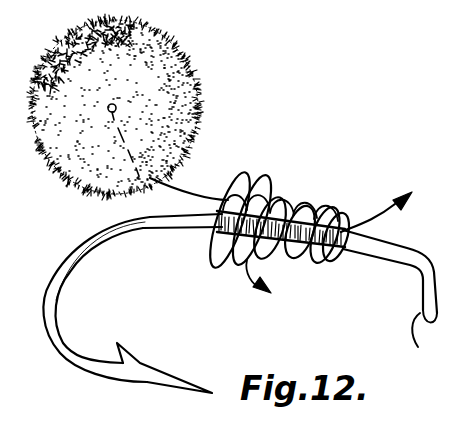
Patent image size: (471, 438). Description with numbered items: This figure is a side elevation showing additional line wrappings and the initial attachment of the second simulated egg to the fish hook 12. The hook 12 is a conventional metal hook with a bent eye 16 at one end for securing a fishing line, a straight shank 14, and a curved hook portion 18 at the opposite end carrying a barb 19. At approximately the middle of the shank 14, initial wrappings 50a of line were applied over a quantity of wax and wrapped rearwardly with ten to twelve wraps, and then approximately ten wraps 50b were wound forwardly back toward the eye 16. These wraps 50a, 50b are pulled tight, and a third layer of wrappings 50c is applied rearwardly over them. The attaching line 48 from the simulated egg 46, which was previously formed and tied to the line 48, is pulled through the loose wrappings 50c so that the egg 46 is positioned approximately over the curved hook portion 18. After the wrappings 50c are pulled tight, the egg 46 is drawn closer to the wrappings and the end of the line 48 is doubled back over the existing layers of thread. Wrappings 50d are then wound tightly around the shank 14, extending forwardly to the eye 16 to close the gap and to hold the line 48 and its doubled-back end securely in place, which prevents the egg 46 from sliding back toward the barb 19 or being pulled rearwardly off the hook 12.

The fish hook 12 is at (420, 238).
The shank 14 is at (172, 222).
The eye 16 is at (429, 339).
The curved hook portion 18 is at (53, 323).
The barb 19 is at (137, 363).
The simulated egg 46 is at (158, 66).
The attaching line 48 is at (383, 216).
The initial wrappings 50a is at (306, 246).
The wraps 50b is at (350, 263).
The third layer of wrappings 50c is at (284, 198).
The wrappings 50d is at (245, 176).